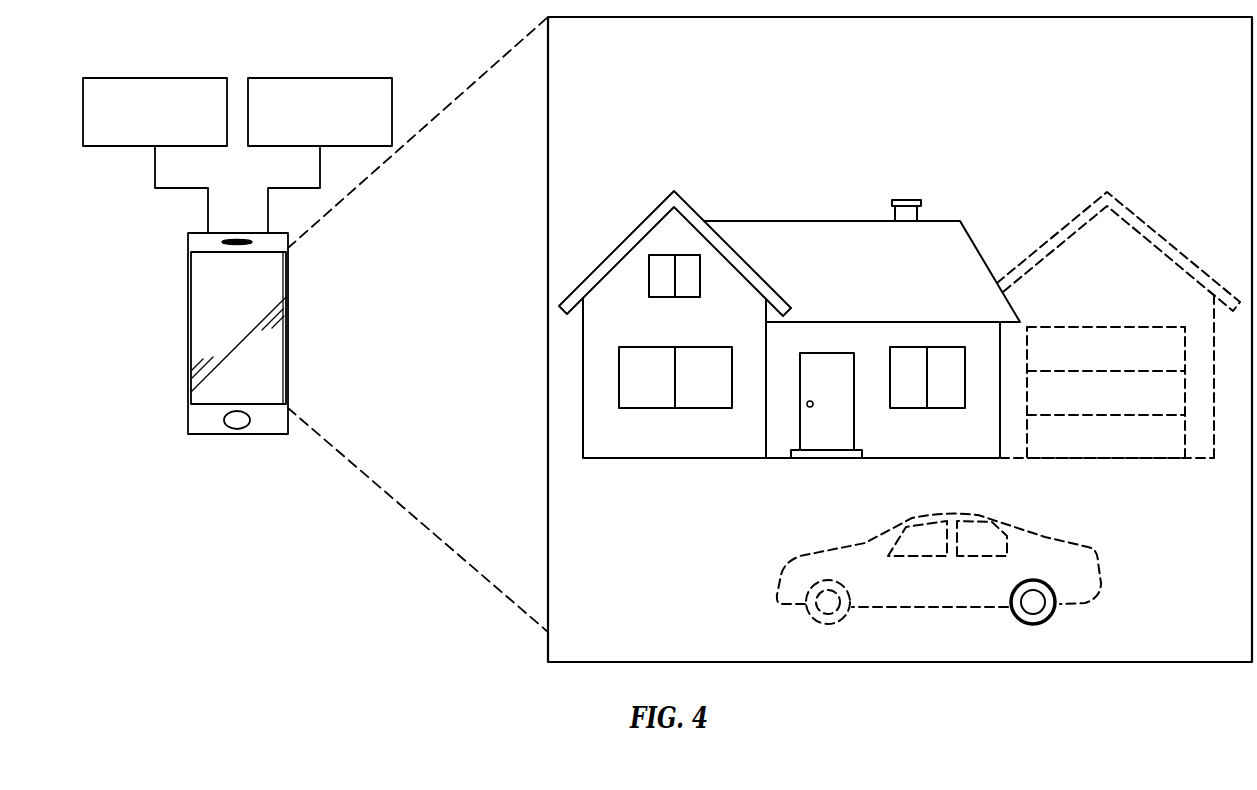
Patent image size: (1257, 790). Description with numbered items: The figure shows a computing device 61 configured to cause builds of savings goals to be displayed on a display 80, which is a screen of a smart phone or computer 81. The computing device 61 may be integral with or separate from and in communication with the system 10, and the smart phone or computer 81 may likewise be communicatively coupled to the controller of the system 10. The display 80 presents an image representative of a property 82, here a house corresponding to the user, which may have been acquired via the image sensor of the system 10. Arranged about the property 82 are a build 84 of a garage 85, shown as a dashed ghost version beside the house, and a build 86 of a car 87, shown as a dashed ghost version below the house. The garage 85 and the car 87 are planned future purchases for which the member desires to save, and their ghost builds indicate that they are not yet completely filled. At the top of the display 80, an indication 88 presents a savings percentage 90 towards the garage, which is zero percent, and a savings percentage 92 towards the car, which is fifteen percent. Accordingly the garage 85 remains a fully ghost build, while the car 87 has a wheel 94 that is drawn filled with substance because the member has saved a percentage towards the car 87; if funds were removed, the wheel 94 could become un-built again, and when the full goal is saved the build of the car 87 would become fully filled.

The system 10 is at (320, 77).
The computing device 61 is at (155, 77).
The display 80 is at (240, 333).
The smart phone or computer 81 is at (287, 330).
The property 82 is at (802, 216).
The build of a garage 84 is at (1118, 341).
The garage 85 is at (1102, 460).
The build of a car 86 is at (939, 575).
The car 87 is at (939, 575).
The indication 88 is at (602, 123).
The savings percentage towards the garage 90 is at (980, 92).
The savings percentage towards the car 92 is at (944, 149).
The wheel 94 is at (1033, 623).